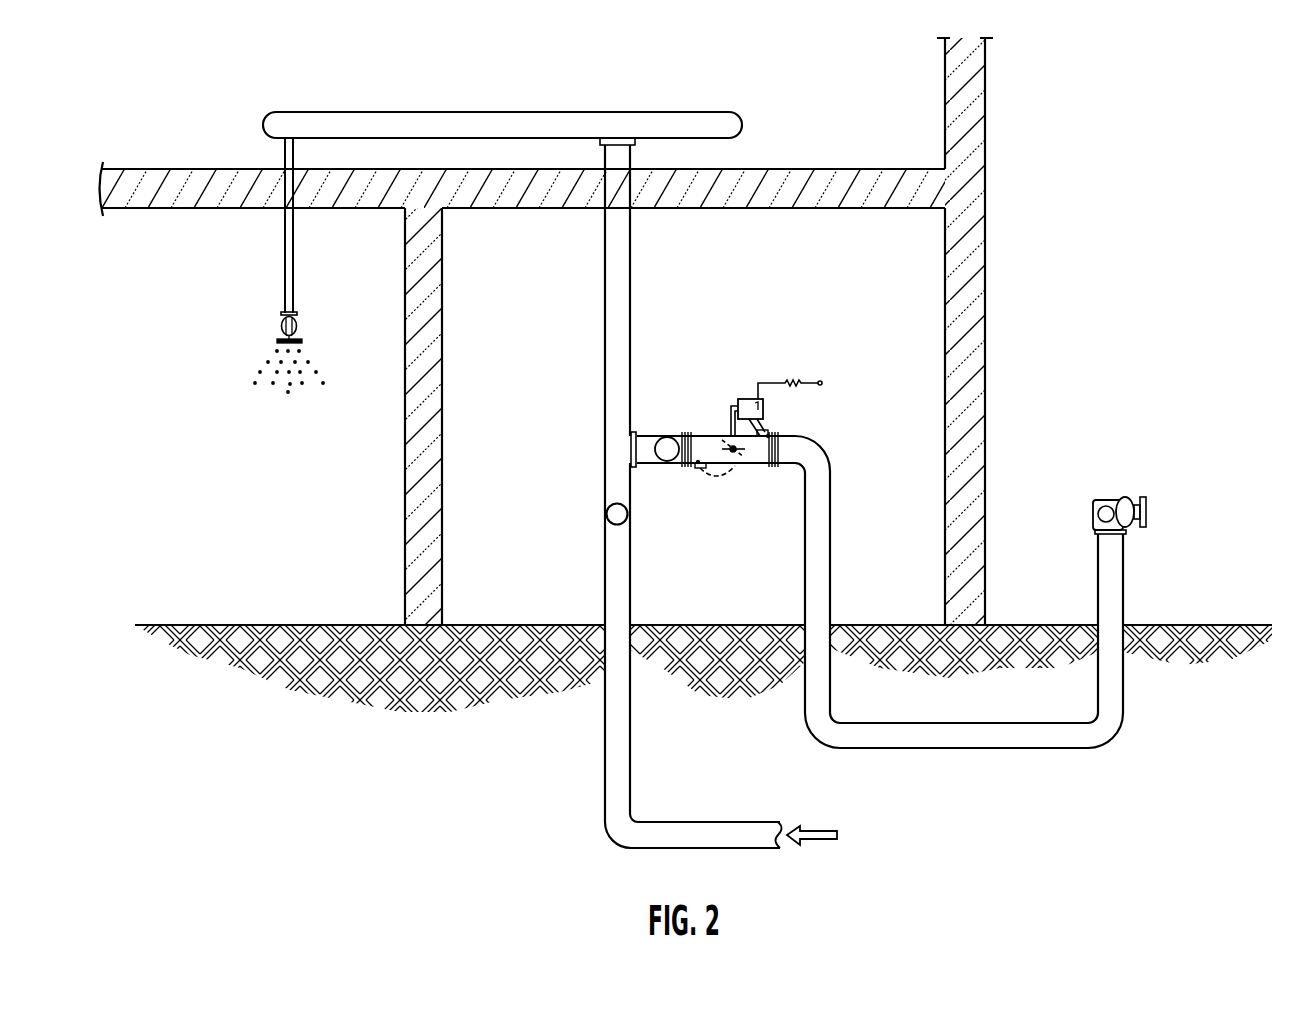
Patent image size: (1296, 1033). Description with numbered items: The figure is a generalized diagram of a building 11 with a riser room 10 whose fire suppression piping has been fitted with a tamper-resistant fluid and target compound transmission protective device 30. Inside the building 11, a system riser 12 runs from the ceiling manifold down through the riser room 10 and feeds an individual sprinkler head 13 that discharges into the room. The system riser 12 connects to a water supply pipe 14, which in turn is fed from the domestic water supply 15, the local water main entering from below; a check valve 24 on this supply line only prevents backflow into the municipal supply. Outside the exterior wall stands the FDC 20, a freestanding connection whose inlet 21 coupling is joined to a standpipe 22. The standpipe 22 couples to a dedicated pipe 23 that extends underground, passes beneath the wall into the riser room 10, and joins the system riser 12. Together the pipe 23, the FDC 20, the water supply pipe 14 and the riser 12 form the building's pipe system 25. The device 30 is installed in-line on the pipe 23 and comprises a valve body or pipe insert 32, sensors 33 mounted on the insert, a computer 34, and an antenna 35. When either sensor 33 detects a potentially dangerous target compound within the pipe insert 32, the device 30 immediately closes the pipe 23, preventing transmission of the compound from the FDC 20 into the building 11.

The riser room 10 is at (918, 292).
The building 11 is at (986, 90).
The system riser 12 is at (630, 282).
The sprinkler head 13 is at (280, 326).
The water supply pipe 14 is at (605, 571).
The domestic water supply 15 is at (604, 826).
The FDC 20 is at (1018, 597).
The inlet 21 is at (1147, 510).
The standpipe 22 is at (1097, 565).
The pipe 23 is at (945, 750).
The check valve 24 is at (606, 512).
The pipe system 25 is at (891, 798).
The fluid and target compound transmission protective device 30 is at (853, 420).
The pipe insert 32 is at (762, 465).
The sensor 33 is at (700, 469).
The computer 34 is at (746, 398).
The antenna 35 is at (805, 382).